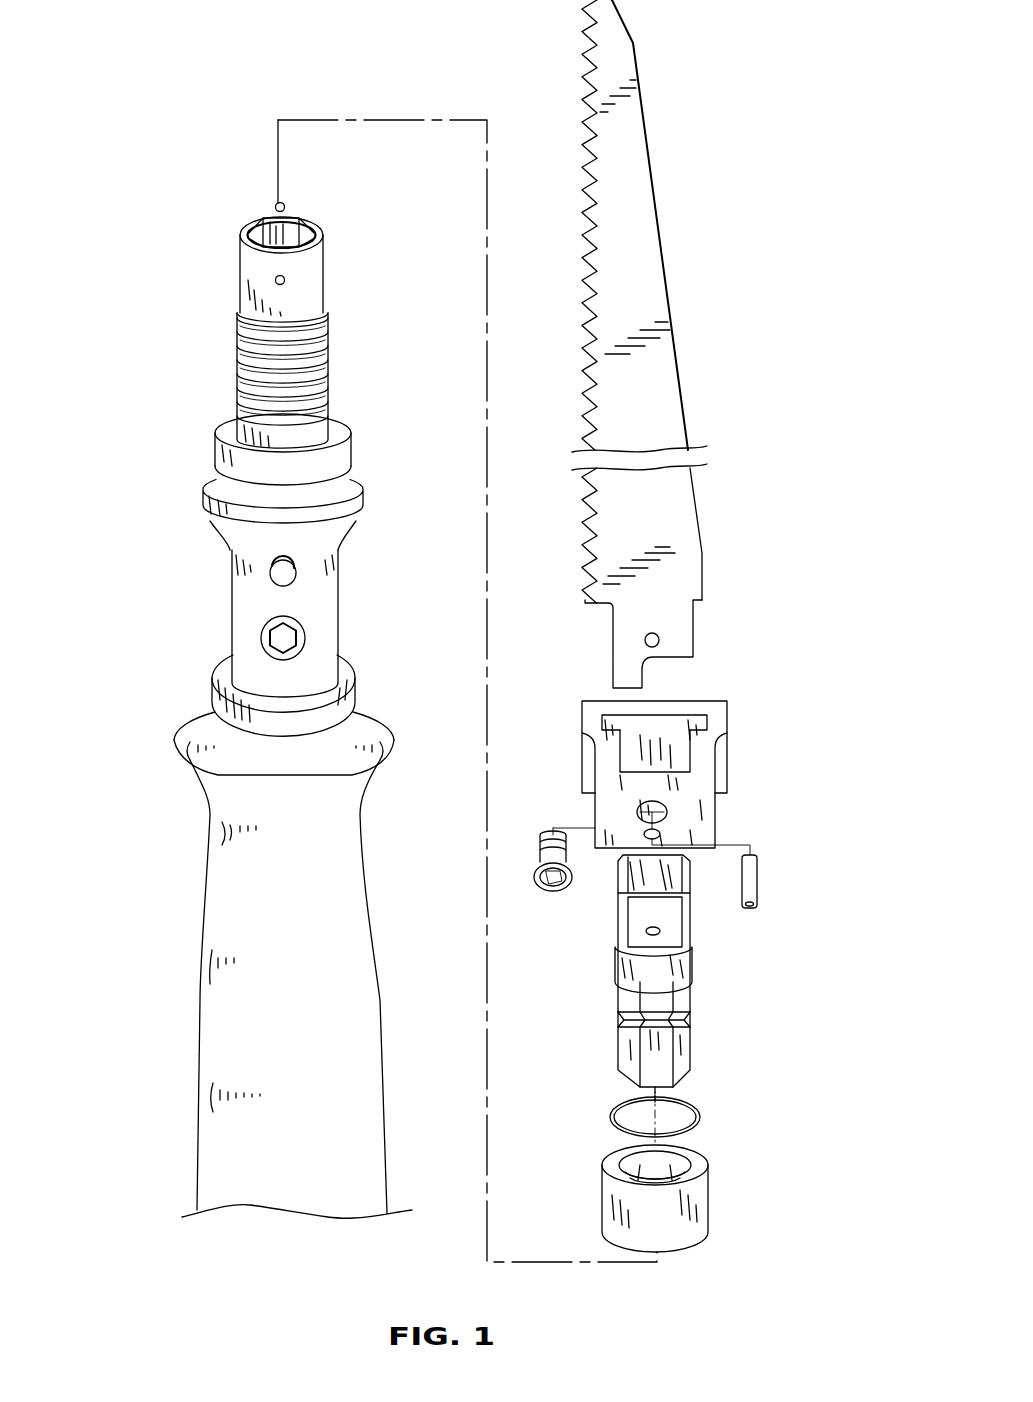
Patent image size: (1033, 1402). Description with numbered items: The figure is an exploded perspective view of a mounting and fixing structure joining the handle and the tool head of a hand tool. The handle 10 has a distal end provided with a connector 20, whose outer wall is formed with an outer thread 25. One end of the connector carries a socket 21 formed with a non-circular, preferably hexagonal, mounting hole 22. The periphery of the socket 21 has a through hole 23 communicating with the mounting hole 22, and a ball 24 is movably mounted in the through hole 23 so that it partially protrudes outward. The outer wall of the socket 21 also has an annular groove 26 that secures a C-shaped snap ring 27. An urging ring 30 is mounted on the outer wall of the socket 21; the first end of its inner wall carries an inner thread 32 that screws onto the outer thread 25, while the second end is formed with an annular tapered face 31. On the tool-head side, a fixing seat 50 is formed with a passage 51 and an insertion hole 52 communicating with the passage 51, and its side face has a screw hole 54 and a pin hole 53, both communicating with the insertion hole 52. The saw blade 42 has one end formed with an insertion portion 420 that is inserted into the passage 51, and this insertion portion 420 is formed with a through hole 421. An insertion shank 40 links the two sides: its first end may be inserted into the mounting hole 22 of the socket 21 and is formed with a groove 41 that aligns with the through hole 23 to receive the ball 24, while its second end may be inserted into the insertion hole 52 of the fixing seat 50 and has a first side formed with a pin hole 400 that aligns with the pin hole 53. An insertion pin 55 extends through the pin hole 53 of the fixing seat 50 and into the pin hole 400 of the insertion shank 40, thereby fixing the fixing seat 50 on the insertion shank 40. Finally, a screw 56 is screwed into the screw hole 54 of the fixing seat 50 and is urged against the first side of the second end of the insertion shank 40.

The handle 10 is at (240, 936).
The connector 20 is at (258, 442).
The socket 21 is at (253, 283).
The mounting hole 22 is at (258, 232).
The through hole 23 is at (285, 281).
The ball 24 is at (285, 205).
The outer thread 25 is at (250, 370).
The annular groove 26 is at (320, 247).
The C-shaped snap ring 27 is at (700, 1108).
The urging ring 30 is at (683, 1195).
The annular tapered face 31 is at (665, 1158).
The inner thread 32 is at (620, 1172).
The insertion shank 40 is at (683, 1000).
The groove 41 is at (622, 1019).
The saw blade 42 is at (670, 545).
The pin hole 400 is at (660, 932).
The insertion portion 420 is at (668, 598).
The through hole 421 is at (658, 637).
The fixing seat 50 is at (710, 770).
The passage 51 is at (727, 706).
The insertion hole 52 is at (638, 762).
The pin hole 53 is at (661, 834).
The screw hole 54 is at (640, 808).
The insertion pin 55 is at (758, 878).
The screw 56 is at (550, 885).